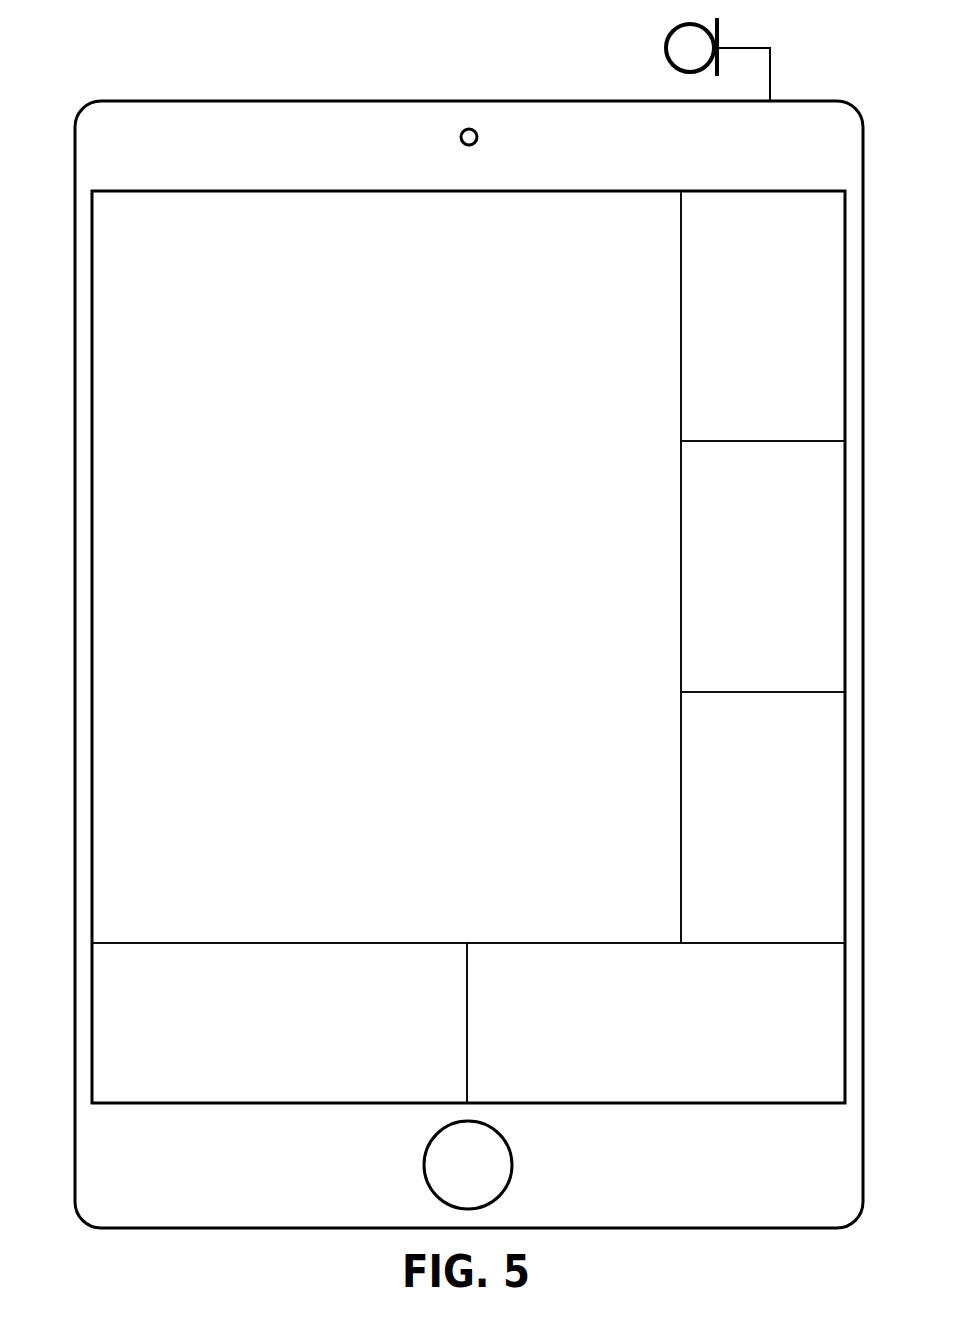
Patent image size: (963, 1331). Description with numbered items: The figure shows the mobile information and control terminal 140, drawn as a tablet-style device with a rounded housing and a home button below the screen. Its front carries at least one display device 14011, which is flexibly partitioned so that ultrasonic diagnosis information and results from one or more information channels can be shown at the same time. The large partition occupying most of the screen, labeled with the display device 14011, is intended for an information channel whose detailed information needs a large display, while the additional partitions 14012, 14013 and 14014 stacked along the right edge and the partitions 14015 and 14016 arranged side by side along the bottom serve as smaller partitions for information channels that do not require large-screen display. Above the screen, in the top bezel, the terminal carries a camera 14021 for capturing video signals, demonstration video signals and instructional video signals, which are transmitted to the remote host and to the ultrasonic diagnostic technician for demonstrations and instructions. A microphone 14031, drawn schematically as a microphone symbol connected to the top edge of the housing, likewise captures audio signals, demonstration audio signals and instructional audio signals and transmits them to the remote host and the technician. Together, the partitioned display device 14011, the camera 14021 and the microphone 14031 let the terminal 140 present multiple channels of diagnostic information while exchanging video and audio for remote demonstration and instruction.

The mobile information and control terminal 140 is at (72, 86).
The display device 14011 is at (125, 388).
The first sub display region 14012 is at (812, 318).
The second sub display region 14013 is at (810, 575).
The third sub display region 14014 is at (810, 810).
The fourth sub display region 14015 is at (122, 1022).
The fifth sub display region 14016 is at (812, 1013).
The camera 14021 is at (468, 128).
The microphone 14031 is at (668, 48).